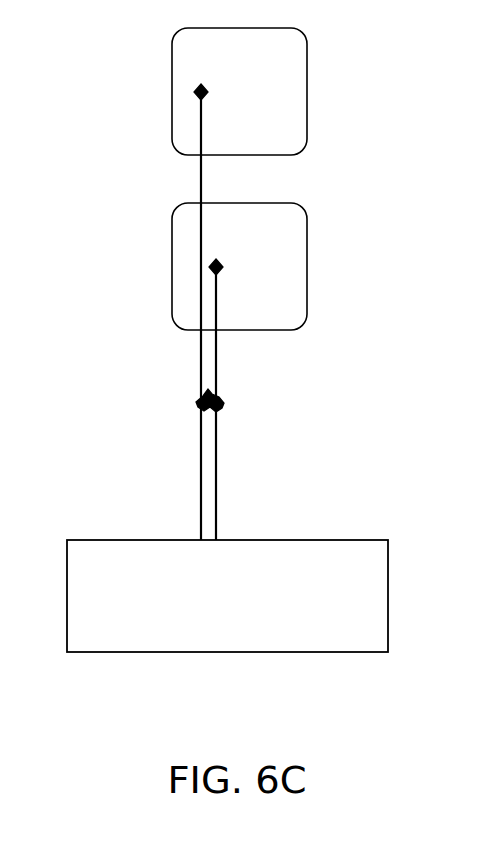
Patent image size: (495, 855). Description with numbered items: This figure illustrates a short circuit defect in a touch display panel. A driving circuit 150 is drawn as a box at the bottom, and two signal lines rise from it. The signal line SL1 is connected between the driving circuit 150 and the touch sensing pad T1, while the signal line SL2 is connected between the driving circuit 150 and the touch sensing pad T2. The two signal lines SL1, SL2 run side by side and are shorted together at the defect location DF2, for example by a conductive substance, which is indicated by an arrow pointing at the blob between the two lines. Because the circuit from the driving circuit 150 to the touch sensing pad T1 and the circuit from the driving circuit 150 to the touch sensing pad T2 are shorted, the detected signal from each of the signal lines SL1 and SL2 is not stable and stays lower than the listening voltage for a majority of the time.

The touch sensing pad T1 is at (186, 67).
The touch sensing pad T2 is at (186, 239).
The signal line SL1 is at (199, 451).
The signal line SL2 is at (218, 487).
The defect location DF2 is at (260, 402).
The driving circuit 150 is at (390, 598).